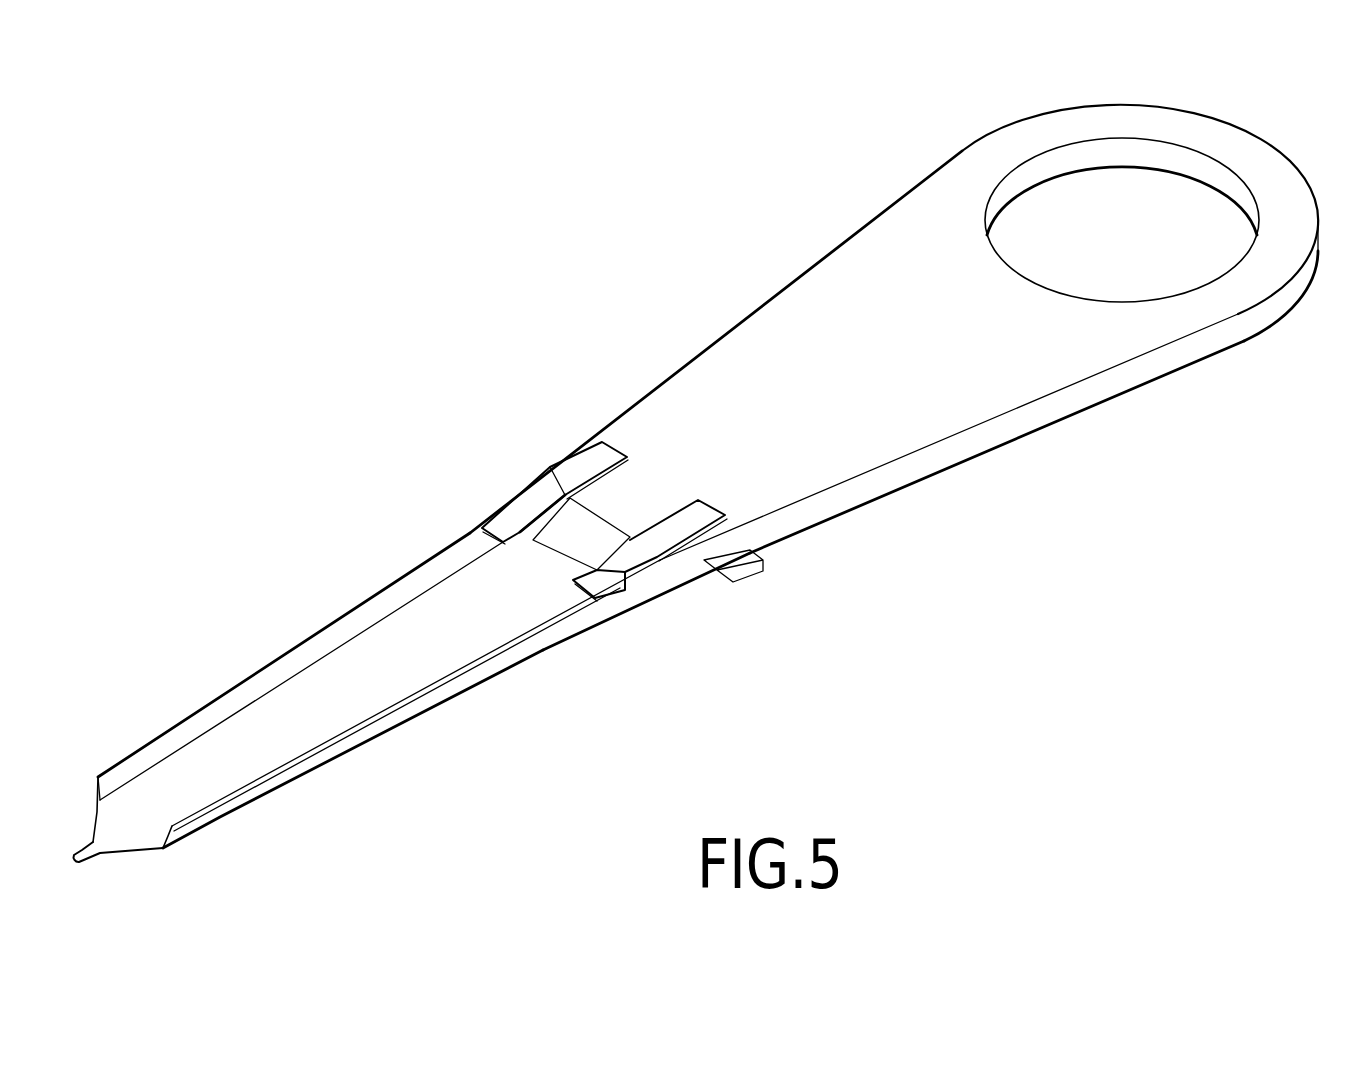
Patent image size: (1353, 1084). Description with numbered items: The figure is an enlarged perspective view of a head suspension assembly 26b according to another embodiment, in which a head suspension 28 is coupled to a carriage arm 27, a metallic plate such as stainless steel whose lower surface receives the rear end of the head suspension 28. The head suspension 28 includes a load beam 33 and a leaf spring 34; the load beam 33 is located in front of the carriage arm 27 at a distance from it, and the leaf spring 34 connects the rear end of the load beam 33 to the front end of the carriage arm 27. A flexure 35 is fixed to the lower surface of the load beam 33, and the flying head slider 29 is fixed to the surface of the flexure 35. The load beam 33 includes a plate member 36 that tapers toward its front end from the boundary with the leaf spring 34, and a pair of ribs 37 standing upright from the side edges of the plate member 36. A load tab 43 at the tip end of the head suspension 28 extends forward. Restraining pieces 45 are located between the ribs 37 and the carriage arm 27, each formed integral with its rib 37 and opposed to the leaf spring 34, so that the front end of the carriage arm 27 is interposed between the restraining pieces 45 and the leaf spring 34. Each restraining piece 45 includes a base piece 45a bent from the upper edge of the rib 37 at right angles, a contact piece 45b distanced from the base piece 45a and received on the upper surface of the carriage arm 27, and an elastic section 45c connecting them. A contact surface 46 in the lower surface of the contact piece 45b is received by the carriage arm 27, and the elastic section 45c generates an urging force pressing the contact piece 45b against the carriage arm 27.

The head suspension assembly 26b is at (667, 277).
The carriage arm 27 is at (890, 220).
The head suspension 28 is at (370, 555).
The flying head slider 29 is at (165, 848).
The load beam 33 is at (320, 628).
The leaf spring 34 is at (678, 588).
The flexure 35 is at (97, 808).
The plate member 36 is at (215, 748).
The rib 37 is at (268, 667).
The load tab 43 is at (87, 860).
The restraining piece 45 is at (623, 458).
The base piece 45a is at (487, 524).
The contact piece 45b is at (593, 450).
The elastic section 45c is at (527, 497).
The contact surface 46 is at (598, 483).